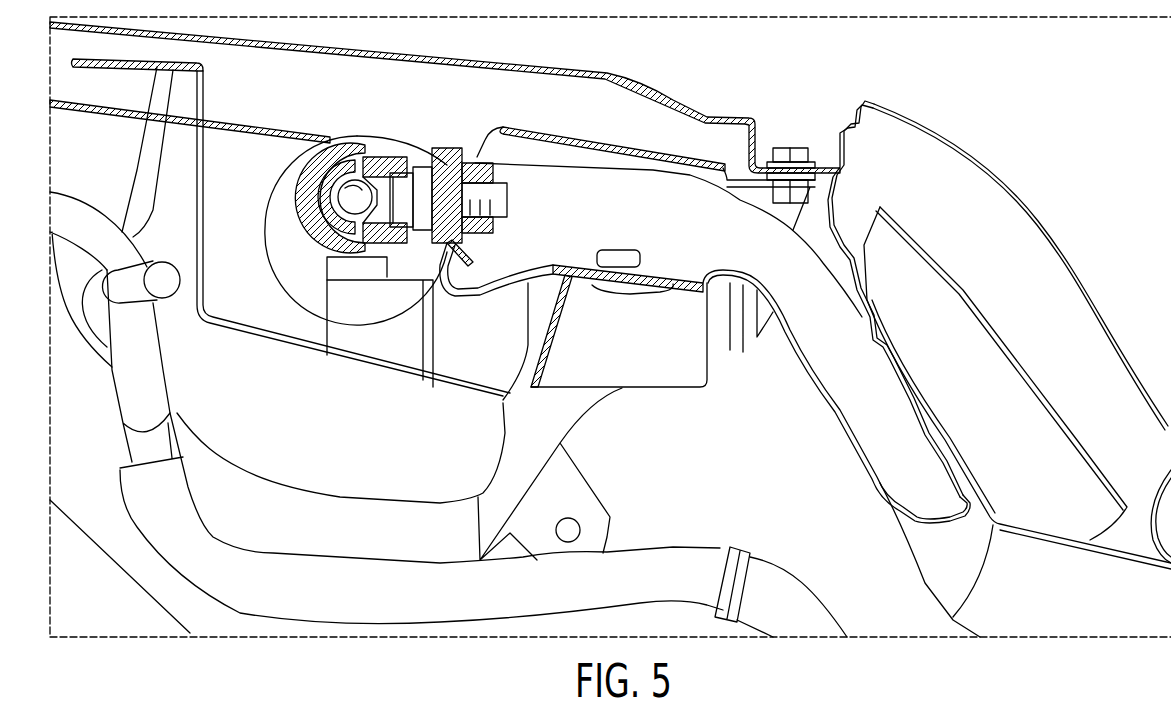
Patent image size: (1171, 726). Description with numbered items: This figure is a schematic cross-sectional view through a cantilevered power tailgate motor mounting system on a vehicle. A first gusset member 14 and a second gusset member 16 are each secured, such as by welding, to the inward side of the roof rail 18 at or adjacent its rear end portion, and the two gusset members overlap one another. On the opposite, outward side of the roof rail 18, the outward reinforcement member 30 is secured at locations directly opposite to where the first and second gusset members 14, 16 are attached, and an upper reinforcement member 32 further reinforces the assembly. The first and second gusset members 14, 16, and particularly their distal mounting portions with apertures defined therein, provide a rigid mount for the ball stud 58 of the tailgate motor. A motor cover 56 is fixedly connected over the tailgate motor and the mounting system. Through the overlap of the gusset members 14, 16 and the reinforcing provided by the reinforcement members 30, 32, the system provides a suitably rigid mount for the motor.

The first gusset member 14 is at (453, 293).
The second gusset member 16 is at (643, 202).
The roof rail 18 is at (873, 313).
The outward reinforcement member 30 is at (997, 410).
The upper reinforcement member 32 is at (625, 143).
The motor cover 56 is at (350, 140).
The ball stud 58 is at (278, 275).